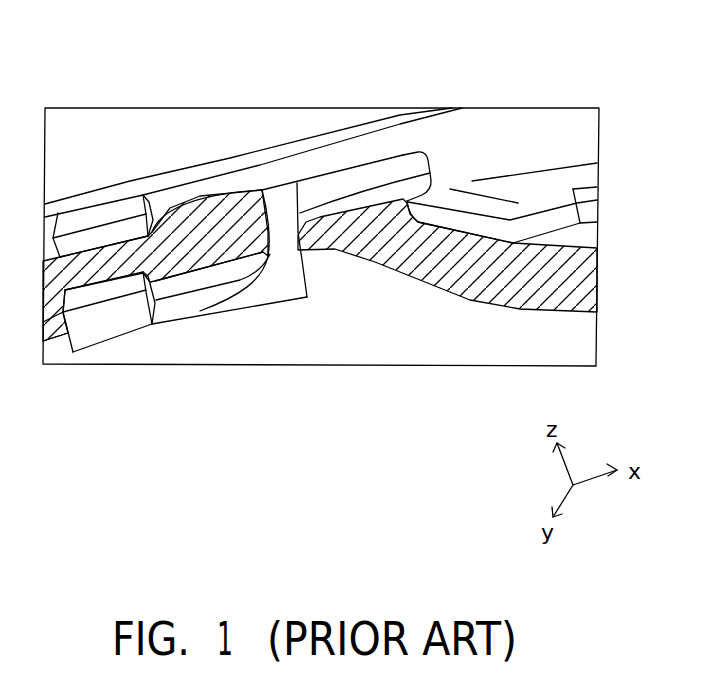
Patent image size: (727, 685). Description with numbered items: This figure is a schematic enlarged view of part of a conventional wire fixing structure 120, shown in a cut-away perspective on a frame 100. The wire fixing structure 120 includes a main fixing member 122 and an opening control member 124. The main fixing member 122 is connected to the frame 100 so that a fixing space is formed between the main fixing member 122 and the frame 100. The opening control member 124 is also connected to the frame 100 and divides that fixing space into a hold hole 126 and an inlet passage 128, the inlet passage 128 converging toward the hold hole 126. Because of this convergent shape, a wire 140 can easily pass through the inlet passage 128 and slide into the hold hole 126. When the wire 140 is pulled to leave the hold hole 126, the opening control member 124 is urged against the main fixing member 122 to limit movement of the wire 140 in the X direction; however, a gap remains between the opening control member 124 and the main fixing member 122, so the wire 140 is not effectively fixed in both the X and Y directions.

The frame 100 is at (493, 133).
The wire fixing structure 120 is at (424, 60).
The main fixing member 122 is at (323, 215).
The opening control member 124 is at (408, 202).
The hold hole 126 is at (348, 257).
The inlet passage 128 is at (502, 132).
The wire 140 is at (580, 280).